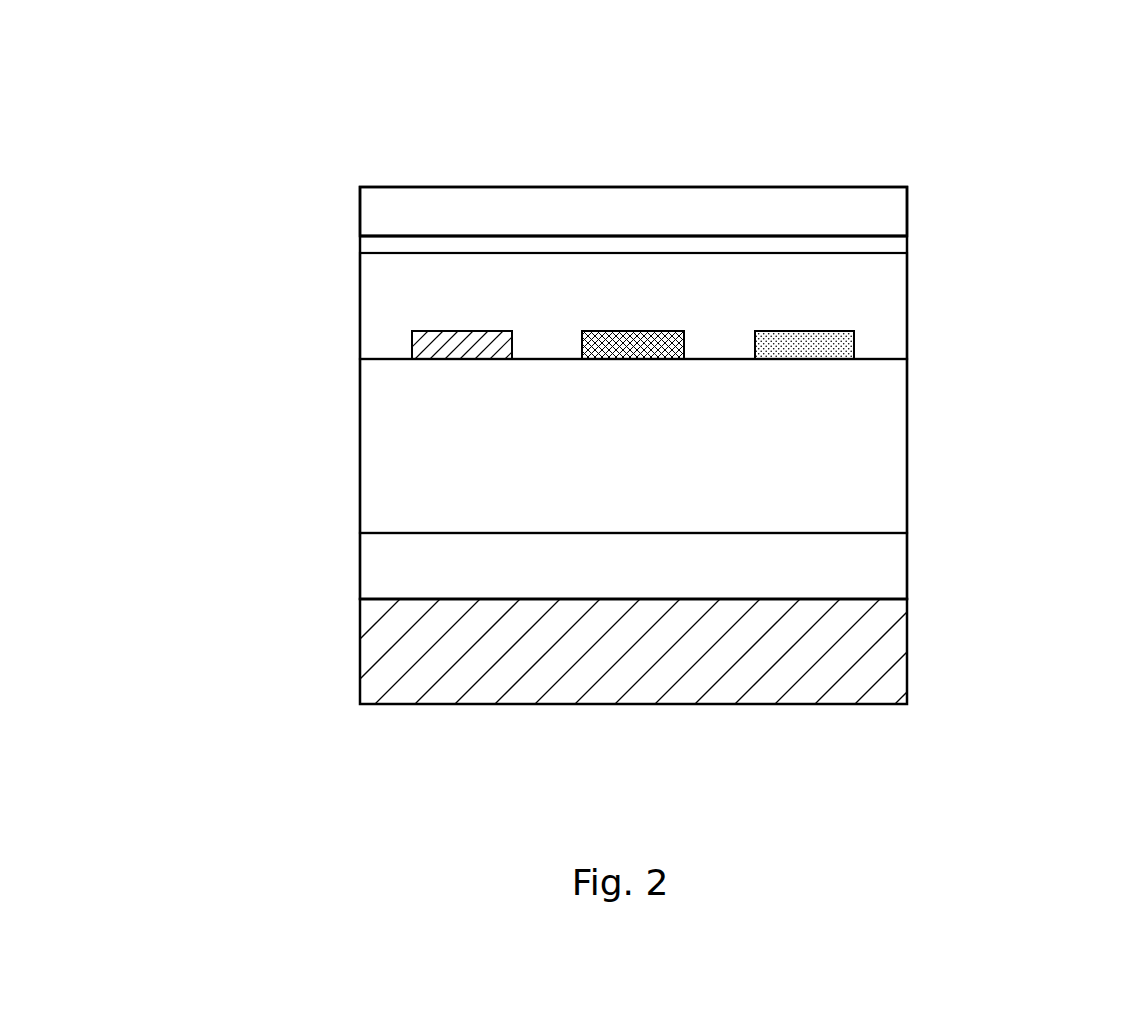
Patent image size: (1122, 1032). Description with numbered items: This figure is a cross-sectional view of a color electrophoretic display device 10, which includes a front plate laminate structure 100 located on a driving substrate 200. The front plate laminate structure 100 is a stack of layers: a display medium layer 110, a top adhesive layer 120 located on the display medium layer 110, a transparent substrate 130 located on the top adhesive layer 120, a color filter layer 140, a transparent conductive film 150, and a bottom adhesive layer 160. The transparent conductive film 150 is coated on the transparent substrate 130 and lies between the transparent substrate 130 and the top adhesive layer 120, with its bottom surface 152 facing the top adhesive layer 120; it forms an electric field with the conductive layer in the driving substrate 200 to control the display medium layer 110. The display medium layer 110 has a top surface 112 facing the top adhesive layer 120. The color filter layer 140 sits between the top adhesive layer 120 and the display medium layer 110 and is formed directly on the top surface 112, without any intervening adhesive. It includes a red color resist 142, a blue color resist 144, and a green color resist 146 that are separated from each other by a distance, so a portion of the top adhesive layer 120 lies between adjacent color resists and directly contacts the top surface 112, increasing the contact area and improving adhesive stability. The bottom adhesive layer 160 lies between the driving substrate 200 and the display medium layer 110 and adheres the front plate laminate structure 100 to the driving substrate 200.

The color electrophoretic display device 10 is at (139, 69).
The front plate laminate structure 100 is at (1028, 127).
The display medium layer 110 is at (900, 446).
The top surface 112 is at (719, 361).
The top adhesive layer 120 is at (900, 305).
The transparent substrate 130 is at (900, 215).
The color filter layer 140 is at (743, 128).
The red color resist 142 is at (462, 331).
The blue color resist 144 is at (633, 331).
The green color resist 146 is at (808, 331).
The transparent conductive film 150 is at (690, 197).
The bottom surface 152 is at (837, 240).
The bottom adhesive layer 160 is at (900, 566).
The driving substrate 200 is at (900, 652).